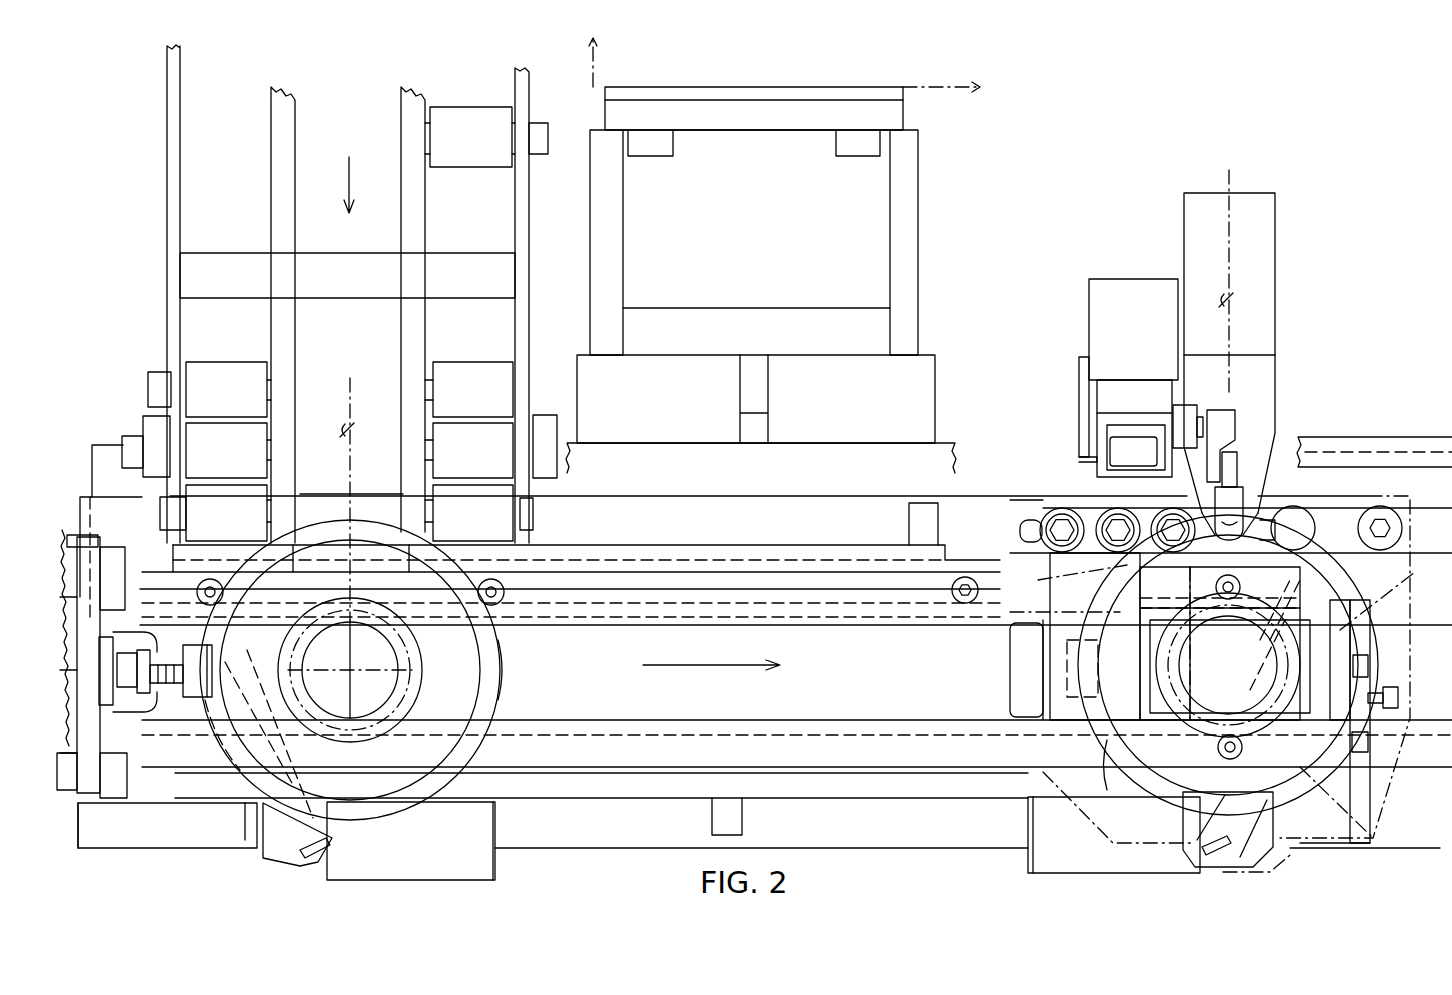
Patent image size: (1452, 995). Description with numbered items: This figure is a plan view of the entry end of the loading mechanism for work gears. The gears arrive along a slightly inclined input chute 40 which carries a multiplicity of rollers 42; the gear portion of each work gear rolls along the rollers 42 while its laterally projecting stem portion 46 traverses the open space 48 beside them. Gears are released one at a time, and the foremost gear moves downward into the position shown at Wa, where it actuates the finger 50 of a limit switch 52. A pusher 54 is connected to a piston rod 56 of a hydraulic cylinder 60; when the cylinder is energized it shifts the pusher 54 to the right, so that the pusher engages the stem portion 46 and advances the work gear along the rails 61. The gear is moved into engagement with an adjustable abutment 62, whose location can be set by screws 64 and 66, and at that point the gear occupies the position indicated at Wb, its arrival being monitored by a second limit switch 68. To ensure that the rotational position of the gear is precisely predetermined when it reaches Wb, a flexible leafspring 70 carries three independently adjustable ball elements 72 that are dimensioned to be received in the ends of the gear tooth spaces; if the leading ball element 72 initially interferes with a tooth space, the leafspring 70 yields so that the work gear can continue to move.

The input chute 40 is at (158, 266).
The rollers 42 is at (222, 382).
The stem portion 46 is at (402, 690).
The open space 48 is at (295, 215).
The finger 50 is at (240, 758).
The limit switch 52 is at (452, 862).
The pusher 54 is at (152, 706).
The piston rod 56 is at (128, 660).
The hydraulic cylinder 60 is at (72, 530).
The rails 61 is at (827, 625).
The adjustable abutment 62 is at (1370, 670).
The screw 64 is at (1368, 662).
The screw 66 is at (1398, 698).
The limit switch 68 is at (1143, 858).
The flexible leafspring 70 is at (1432, 500).
The ball elements 72 is at (1068, 505).
The work gear position Wa is at (500, 676).
The work gear position Wb is at (1106, 766).